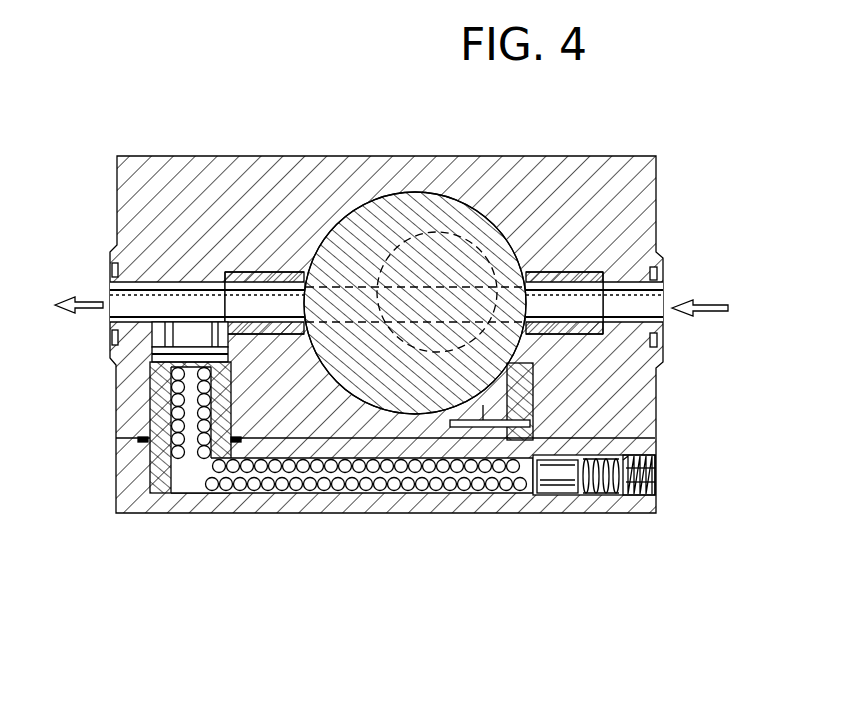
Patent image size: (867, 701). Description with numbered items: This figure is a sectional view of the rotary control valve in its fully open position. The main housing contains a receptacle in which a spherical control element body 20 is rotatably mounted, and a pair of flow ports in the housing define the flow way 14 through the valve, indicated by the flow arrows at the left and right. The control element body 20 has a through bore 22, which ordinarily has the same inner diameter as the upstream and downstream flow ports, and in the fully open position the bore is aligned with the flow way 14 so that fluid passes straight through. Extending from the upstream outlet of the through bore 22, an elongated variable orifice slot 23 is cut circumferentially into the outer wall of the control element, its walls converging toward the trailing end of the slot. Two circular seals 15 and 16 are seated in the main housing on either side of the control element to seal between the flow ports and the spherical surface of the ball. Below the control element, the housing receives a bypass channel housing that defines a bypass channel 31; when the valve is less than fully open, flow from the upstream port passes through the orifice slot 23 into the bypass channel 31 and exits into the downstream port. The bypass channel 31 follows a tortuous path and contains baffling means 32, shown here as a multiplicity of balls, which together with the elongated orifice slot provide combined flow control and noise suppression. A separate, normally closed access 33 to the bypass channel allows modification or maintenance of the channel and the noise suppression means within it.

The flow way 14 is at (83, 310).
The circular seal 15 is at (228, 277).
The circular seal 16 is at (605, 275).
The control element body 20 is at (372, 262).
The through bore 22 is at (381, 250).
The elongated variable orifice slot 23 is at (480, 250).
The bypass channel 31 is at (455, 421).
The baffling means 32 is at (415, 492).
The normally closed access 33 is at (657, 477).